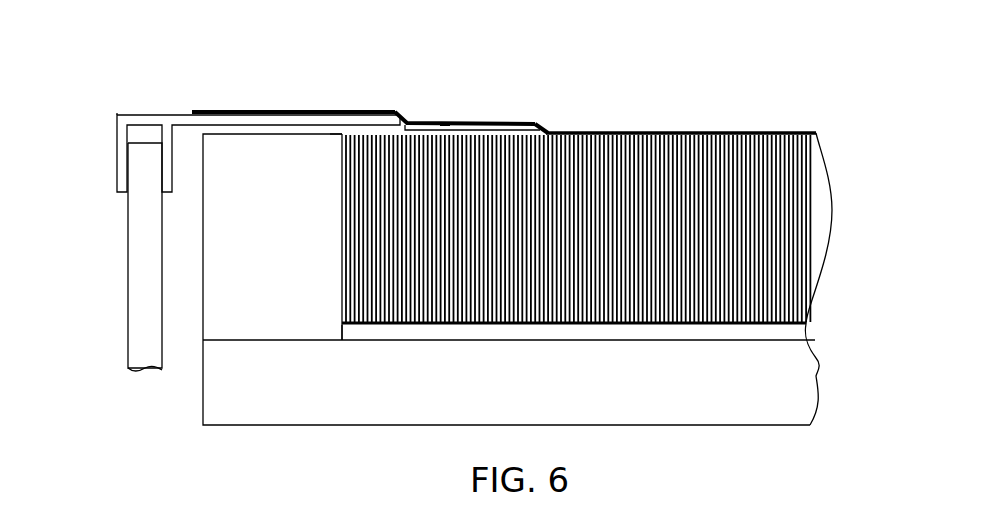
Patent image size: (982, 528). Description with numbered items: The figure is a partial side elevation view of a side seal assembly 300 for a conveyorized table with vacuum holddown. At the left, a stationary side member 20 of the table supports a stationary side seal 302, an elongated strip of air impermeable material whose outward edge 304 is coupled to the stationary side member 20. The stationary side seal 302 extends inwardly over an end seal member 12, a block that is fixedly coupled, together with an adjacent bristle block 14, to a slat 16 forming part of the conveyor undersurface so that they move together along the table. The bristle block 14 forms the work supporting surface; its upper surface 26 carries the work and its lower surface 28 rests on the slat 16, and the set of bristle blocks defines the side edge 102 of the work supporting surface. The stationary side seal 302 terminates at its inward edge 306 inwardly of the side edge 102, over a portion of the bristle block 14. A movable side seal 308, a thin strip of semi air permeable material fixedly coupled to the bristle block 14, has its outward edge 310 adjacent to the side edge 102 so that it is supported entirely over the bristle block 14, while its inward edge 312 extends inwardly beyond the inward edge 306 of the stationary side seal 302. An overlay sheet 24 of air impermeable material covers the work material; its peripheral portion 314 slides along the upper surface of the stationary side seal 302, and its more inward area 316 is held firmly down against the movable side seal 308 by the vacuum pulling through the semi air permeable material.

The end seal member 12 is at (237, 232).
The bristle block 14 is at (788, 204).
The slat 16 is at (385, 407).
The stationary side member 20 is at (145, 252).
The overlay sheet 24 is at (639, 132).
The upper surface 26 is at (742, 132).
The lower surface 28 is at (765, 342).
The side edge 102 is at (342, 297).
The side seal assembly 300 is at (312, 85).
The stationary side seal 302 is at (113, 72).
The outward edge 304 is at (117, 114).
The inward edge 306 is at (403, 122).
The movable side seal 308 is at (477, 129).
The outward edge 310 is at (342, 136).
The inward edge 312 is at (540, 126).
The peripheral portion 314 is at (266, 111).
The inward area 316 is at (445, 123).